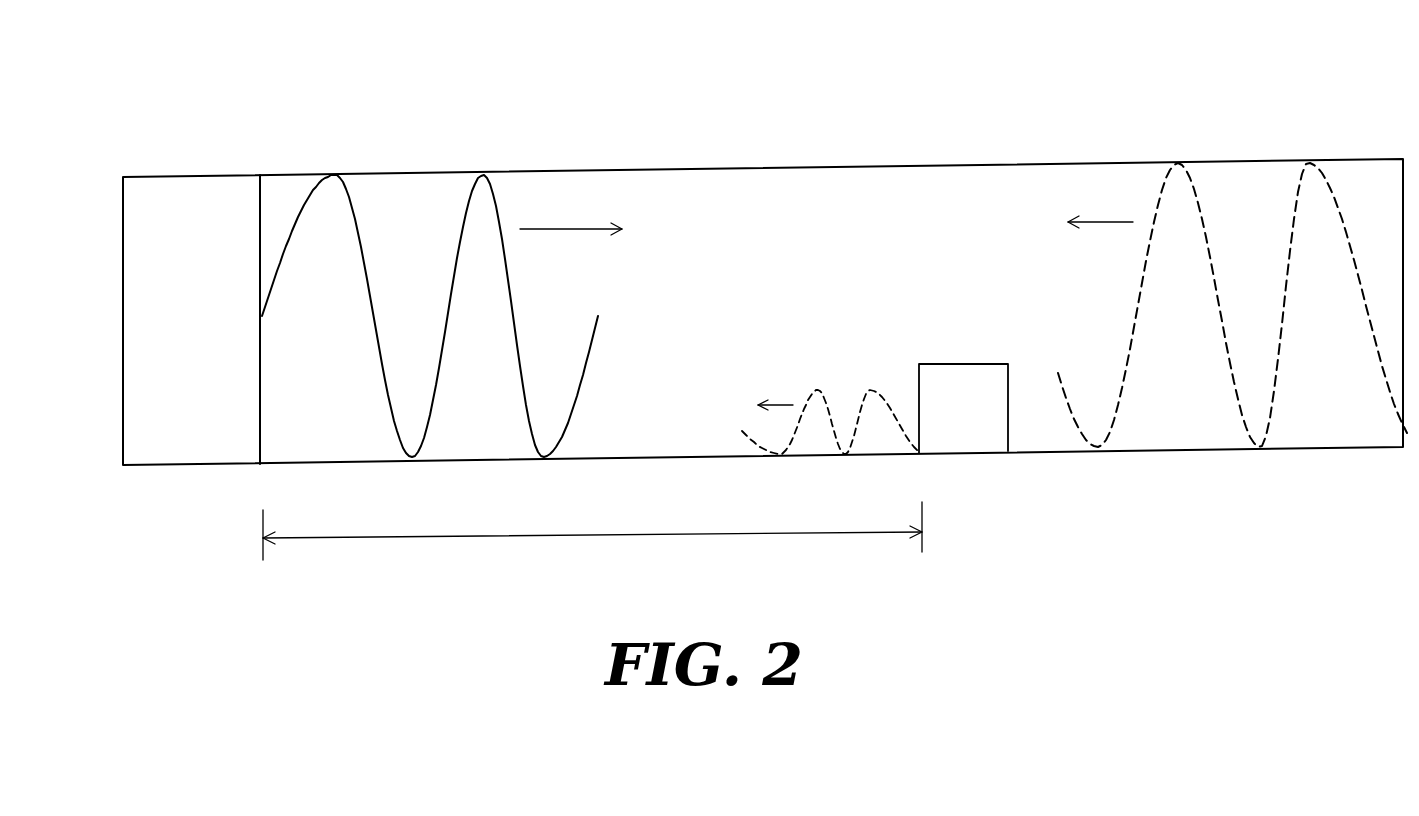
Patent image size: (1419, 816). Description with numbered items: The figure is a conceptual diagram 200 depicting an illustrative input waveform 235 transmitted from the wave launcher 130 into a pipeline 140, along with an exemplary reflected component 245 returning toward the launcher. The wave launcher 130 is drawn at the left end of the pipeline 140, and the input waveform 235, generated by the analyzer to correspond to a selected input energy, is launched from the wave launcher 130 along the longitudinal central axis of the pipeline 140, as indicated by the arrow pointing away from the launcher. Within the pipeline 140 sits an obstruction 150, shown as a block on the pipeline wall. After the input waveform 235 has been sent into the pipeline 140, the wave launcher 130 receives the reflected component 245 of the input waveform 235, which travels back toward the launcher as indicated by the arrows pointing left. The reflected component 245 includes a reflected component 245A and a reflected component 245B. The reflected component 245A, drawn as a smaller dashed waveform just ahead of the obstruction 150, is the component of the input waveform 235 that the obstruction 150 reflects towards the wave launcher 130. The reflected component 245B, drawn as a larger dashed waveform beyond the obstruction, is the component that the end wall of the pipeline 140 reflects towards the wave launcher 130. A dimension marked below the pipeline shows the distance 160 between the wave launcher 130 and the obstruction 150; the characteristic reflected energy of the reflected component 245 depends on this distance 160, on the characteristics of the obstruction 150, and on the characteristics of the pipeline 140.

The conceptual diagram 200 is at (463, 26).
The wave launcher 130 is at (187, 175).
The input waveform 235 is at (482, 207).
The pipeline 140 is at (893, 165).
The obstruction 150 is at (980, 457).
The distance 160 is at (660, 535).
The reflected component 245 is at (1049, 385).
The reflected component 245A is at (897, 475).
The reflected component 245B is at (1350, 393).